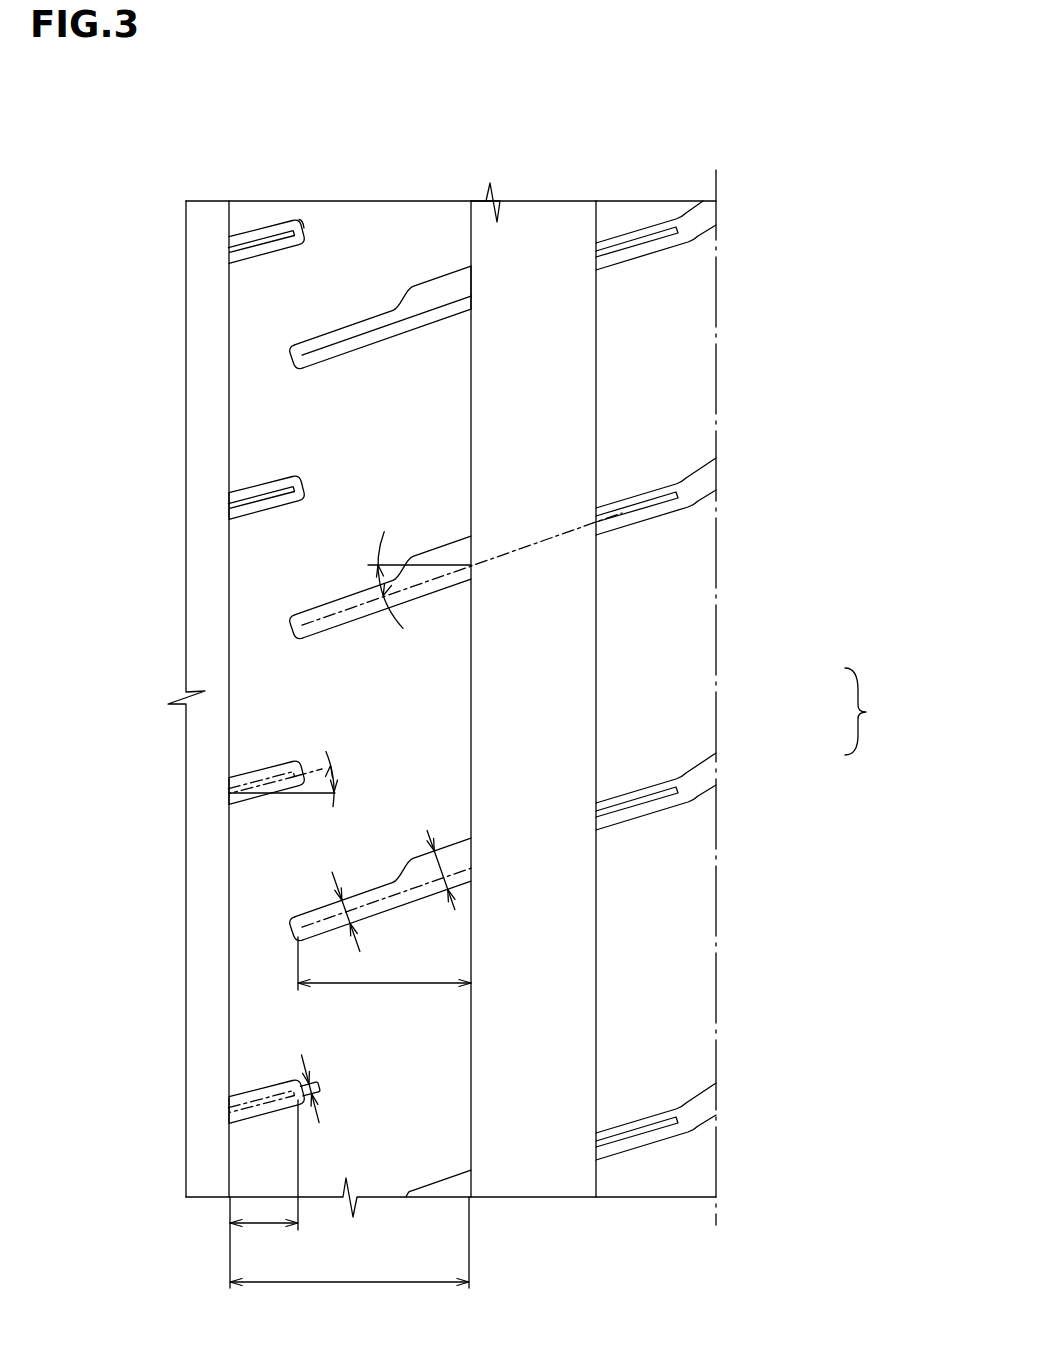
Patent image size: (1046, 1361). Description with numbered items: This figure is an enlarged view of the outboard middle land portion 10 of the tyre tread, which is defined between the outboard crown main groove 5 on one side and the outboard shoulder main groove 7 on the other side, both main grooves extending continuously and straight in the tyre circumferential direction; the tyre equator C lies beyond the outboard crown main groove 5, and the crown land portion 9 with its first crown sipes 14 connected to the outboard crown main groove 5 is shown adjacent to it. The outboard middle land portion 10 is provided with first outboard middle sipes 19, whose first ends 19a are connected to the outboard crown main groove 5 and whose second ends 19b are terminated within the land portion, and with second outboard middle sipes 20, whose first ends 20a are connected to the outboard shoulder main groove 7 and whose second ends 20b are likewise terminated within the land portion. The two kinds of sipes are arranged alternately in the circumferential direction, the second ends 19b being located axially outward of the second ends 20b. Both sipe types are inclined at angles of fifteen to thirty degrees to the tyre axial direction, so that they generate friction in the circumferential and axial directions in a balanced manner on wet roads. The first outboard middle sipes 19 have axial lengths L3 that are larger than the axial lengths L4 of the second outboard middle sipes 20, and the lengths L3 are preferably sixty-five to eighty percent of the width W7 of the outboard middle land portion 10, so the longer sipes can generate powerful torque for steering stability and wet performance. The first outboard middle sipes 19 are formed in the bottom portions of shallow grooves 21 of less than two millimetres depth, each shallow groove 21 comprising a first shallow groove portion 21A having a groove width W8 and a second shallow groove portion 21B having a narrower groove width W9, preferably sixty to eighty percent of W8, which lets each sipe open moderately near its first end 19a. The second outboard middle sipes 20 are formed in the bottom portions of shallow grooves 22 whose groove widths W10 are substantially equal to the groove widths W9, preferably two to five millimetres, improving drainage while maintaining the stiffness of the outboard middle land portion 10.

The outboard crown main groove 5 is at (526, 235).
The outboard shoulder main groove 7 is at (207, 222).
The crown land portion 9 is at (655, 298).
The outboard middle land portion 10 is at (357, 243).
The first crown sipes 14 is at (625, 515).
The first outboard middle sipes 19 is at (505, 655).
The first ends of the first outboard middle sipes 19a is at (474, 291).
The second ends of the first outboard middle sipes 19b is at (290, 358).
The second outboard middle sipes 20 is at (265, 240).
The first ends of the second outboard middle sipes 20a is at (226, 254).
The second ends of the second outboard middle sipes 20b is at (315, 227).
The shallow grooves 21 is at (875, 711).
The first shallow groove portion 21A is at (457, 852).
The second shallow groove portion 21B is at (363, 893).
The shallow grooves 22 is at (265, 1110).
The tyre equator C is at (715, 683).
The width of the outboard middle land portion W7 is at (349, 1258).
The groove width of the first shallow groove portion W8 is at (452, 868).
The groove width of the second shallow groove portion W9 is at (345, 905).
The groove widths of the shallow grooves 22 W10 is at (322, 1078).
The lengths of the first outboard middle sipes L3 is at (385, 985).
The lengths of the second outboard middle sipes L4 is at (264, 1181).